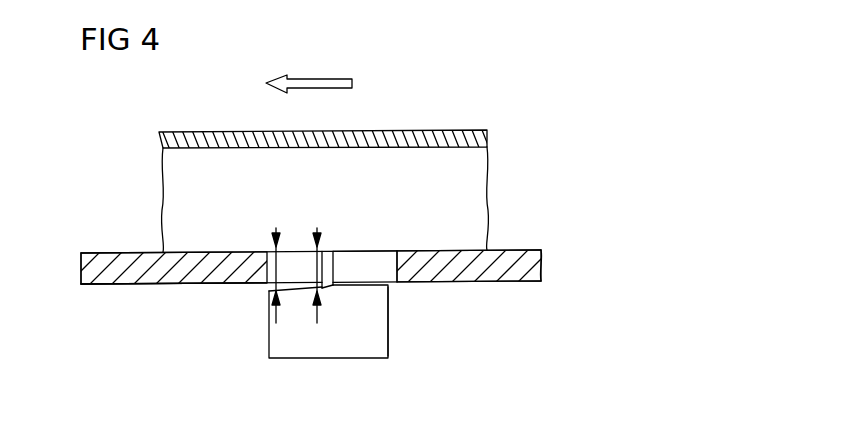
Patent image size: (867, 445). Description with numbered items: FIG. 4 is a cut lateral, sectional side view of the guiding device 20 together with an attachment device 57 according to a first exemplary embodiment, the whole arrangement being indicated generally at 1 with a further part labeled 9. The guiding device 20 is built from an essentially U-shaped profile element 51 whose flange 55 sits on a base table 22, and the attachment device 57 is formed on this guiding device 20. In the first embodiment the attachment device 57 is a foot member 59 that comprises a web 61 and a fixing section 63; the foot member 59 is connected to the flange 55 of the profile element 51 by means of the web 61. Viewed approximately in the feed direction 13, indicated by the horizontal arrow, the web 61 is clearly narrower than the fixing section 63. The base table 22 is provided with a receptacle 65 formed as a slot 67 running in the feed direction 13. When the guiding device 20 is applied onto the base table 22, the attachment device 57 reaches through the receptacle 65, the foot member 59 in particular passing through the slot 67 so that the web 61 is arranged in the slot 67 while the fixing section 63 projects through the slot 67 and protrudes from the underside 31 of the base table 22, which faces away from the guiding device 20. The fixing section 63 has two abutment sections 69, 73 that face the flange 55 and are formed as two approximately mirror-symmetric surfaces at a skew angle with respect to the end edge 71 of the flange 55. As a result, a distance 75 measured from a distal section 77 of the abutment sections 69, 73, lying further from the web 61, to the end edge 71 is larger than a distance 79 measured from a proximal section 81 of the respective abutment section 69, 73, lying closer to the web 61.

The device 1 is at (530, 103).
The cover plate 9 is at (441, 130).
The feed direction 13 is at (318, 81).
The guiding device 20 is at (553, 193).
The essentially U-shaped profile element 51 is at (510, 159).
The base table 22 is at (108, 253).
The underside 31 is at (118, 298).
The flange 55 is at (371, 184).
The attachment device 57 is at (403, 324).
The foot member 59 is at (425, 332).
The web 61 is at (340, 266).
The fixing section 63 is at (386, 358).
The receptacle 65 is at (396, 263).
The slot 67 is at (388, 237).
The abutment section 69 is at (389, 293).
The end edge 71 is at (189, 253).
The abutment section 73 is at (316, 306).
The distance 75 is at (276, 228).
The distal section 77 is at (283, 315).
The distance 79 is at (317, 228).
The proximal section 81 is at (335, 303).